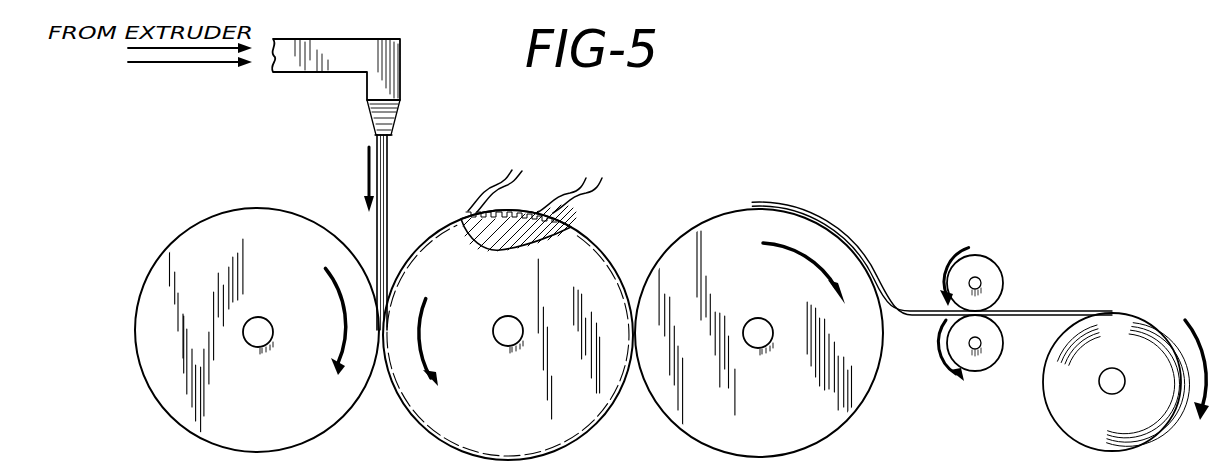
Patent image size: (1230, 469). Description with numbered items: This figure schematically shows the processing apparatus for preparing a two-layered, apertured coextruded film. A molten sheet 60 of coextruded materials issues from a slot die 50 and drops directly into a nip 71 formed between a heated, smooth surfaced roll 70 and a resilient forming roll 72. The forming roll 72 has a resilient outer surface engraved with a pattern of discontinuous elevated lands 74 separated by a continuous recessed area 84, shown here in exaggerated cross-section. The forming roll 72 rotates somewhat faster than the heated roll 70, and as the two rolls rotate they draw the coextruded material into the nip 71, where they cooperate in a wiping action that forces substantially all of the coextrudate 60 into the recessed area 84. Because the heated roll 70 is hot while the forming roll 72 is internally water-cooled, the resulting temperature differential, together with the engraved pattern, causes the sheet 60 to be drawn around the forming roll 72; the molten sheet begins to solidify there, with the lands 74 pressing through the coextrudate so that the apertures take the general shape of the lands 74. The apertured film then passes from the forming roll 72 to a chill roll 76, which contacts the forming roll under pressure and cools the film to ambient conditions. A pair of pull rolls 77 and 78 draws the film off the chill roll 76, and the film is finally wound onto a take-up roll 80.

The slot die 50 is at (401, 62).
The molten sheet 60 is at (387, 183).
The heated smooth surfaced roll 70 is at (232, 220).
The nip 71 is at (366, 266).
The resilient forming roll 72 is at (470, 425).
The discontinuous elevated lands 74 is at (518, 199).
The chill roll 76 is at (708, 418).
The pull roll 77 is at (988, 272).
The pull roll 78 is at (981, 362).
The take-up roll 80 is at (1081, 417).
The continuous recessed area 84 is at (572, 186).